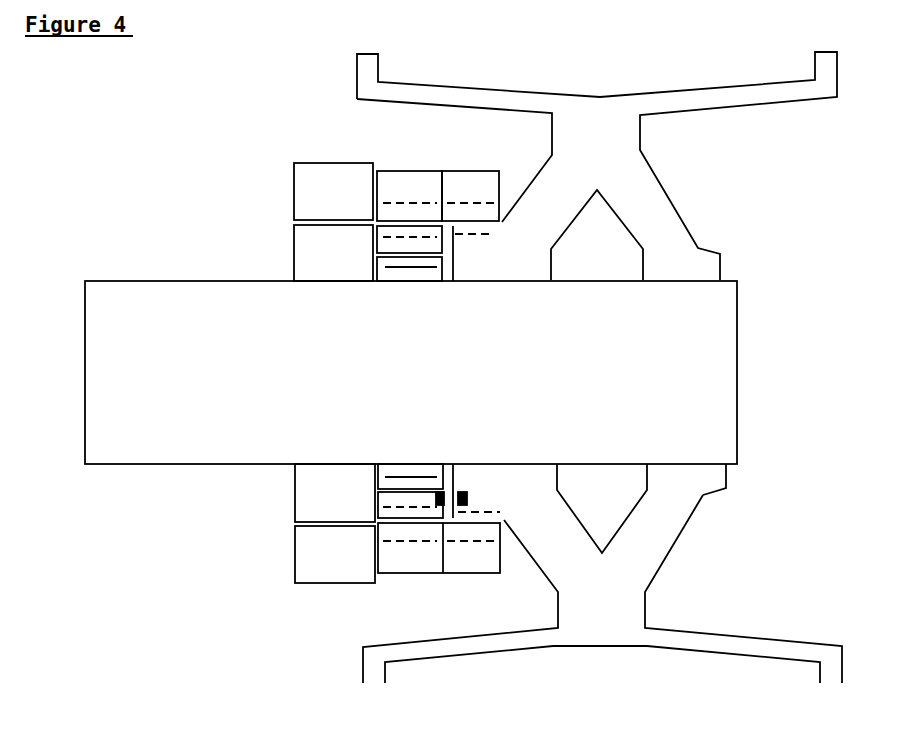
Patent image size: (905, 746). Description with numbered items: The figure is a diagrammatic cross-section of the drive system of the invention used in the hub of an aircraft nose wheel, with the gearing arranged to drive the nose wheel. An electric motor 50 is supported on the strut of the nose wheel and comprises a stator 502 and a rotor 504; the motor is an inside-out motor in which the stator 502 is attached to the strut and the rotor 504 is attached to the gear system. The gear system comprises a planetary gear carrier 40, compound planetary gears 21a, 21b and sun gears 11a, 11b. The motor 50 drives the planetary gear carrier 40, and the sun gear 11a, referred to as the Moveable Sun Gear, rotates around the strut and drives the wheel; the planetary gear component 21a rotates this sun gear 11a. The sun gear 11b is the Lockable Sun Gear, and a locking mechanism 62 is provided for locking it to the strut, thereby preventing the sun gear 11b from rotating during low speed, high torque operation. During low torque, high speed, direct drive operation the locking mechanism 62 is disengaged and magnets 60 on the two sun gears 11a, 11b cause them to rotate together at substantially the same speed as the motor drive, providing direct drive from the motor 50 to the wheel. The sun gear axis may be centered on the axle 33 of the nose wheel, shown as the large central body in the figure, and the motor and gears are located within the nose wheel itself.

The axle 33 is at (411, 372).
The planetary gear carrier 40 is at (438, 196).
The electric motor 50 is at (301, 222).
The stator 502 is at (333, 253).
The rotor 504 is at (333, 191).
The compound planetary gear 21a is at (470, 196).
The compound planetary gear 21b is at (409, 196).
The sun gear 11a is at (473, 253).
The sun gear 11b is at (409, 240).
The magnets 60 is at (462, 506).
The locking mechanism 62 is at (408, 261).